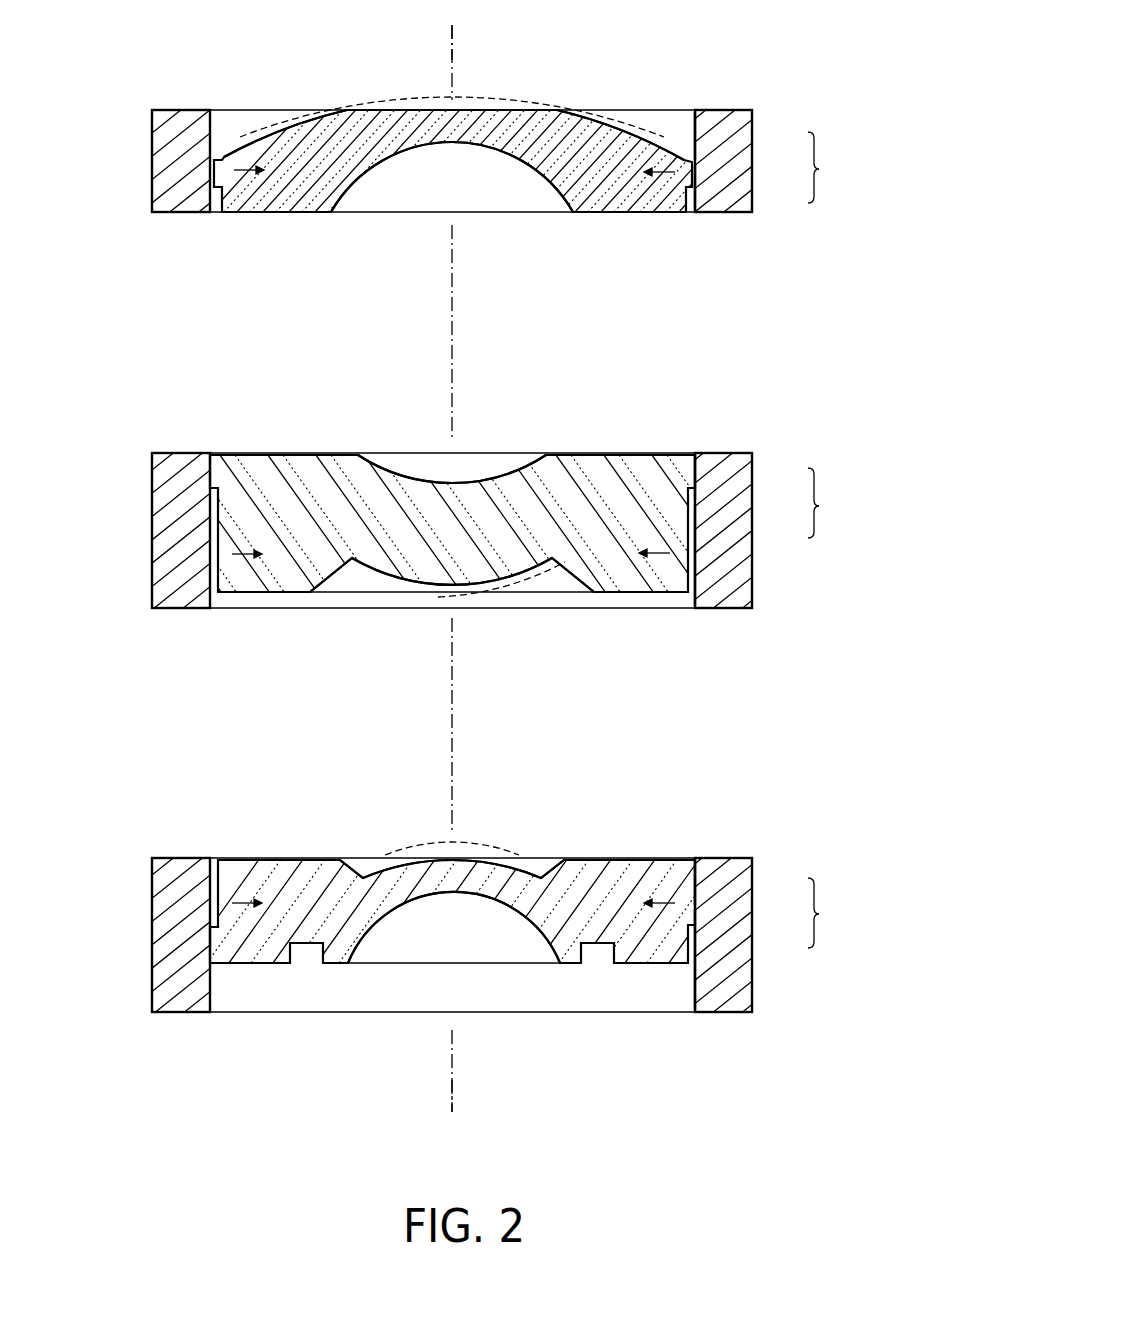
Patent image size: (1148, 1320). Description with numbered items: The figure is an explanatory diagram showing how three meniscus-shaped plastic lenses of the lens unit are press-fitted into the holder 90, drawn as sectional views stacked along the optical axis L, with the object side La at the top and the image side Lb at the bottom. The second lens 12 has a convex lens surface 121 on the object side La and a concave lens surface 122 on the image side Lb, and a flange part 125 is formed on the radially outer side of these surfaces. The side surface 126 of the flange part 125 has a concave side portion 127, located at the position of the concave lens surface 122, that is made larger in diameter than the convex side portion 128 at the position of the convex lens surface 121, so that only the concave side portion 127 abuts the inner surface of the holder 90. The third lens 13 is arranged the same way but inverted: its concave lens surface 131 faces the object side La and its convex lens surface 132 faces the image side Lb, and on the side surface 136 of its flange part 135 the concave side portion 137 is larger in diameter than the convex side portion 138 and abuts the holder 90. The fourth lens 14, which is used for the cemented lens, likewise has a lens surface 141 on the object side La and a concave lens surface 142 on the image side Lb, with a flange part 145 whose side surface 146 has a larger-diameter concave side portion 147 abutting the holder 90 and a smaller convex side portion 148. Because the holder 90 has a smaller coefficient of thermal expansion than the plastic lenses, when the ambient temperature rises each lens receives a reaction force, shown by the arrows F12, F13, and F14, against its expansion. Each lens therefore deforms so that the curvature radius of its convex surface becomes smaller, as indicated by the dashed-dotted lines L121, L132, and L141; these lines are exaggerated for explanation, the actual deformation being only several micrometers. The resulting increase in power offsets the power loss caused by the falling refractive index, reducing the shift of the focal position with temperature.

The second lens 12 is at (622, 124).
The lens surface 121 is at (556, 109).
The dashed-dotted line L121 is at (417, 98).
The lens surface 122 is at (514, 172).
The flange part 125 is at (662, 198).
The side surface 126 is at (776, 161).
The concave side portion 127 is at (697, 205).
The convex side portion 128 is at (697, 167).
The reaction force F12 is at (639, 160).
The third lens 13 is at (616, 462).
The lens surface 131 is at (510, 474).
The lens surface 132 is at (513, 580).
The dashed-dotted line L132 is at (440, 598).
The flange part 135 is at (662, 580).
The side surface 136 is at (776, 530).
The concave side portion 137 is at (697, 490).
The convex side portion 138 is at (697, 533).
The reaction force F13 is at (648, 540).
The fourth lens 14 is at (622, 872).
The lens surface 141 is at (490, 857).
The dashed-dotted line L141 is at (417, 847).
The lens surface 142 is at (489, 902).
The flange part 145 is at (662, 946).
The side surface 146 is at (776, 935).
The concave side portion 147 is at (697, 944).
The convex side portion 148 is at (697, 900).
The reaction force F14 is at (657, 889).
The holder 90 is at (752, 113).
The optical axis L is at (462, 568).
The object side La is at (452, 31).
The image side Lb is at (452, 1110).